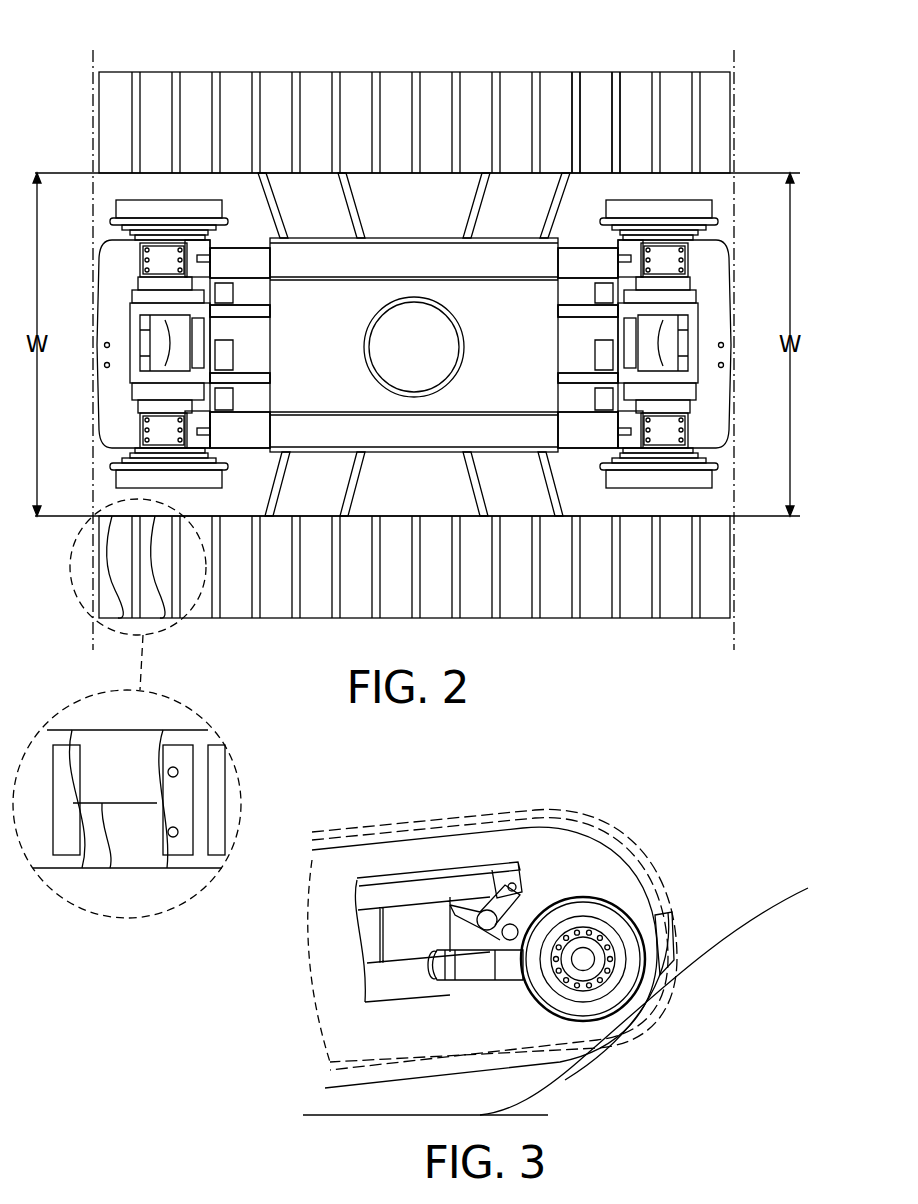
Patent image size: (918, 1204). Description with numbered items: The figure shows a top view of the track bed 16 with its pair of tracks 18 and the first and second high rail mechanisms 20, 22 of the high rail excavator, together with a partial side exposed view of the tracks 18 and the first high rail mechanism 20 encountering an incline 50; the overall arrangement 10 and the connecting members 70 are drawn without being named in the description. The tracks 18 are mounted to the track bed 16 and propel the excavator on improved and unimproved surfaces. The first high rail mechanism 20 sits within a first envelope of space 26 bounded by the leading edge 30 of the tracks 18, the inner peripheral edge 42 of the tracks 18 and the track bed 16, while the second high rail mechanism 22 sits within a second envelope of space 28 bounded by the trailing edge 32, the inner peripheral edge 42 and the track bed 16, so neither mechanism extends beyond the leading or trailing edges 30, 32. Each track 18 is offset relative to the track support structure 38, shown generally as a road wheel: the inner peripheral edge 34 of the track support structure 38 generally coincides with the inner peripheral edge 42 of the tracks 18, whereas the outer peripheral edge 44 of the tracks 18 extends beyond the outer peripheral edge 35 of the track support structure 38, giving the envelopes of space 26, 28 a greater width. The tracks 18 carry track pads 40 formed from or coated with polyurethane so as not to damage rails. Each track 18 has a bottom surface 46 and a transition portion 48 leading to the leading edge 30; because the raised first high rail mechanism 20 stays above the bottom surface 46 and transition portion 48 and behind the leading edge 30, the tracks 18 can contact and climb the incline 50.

In FIG. 3, the tracked vehicle 10 is at (355, 815).
In FIG. 2, the track bed 16 is at (415, 248).
In FIG. 2, the tracks 18 is at (415, 72).
In FIG. 3, the tracks 18 is at (435, 838).
In FIG. 2, the first high rail mechanism 20 is at (100, 215).
In FIG. 3, the first high rail mechanism 20 is at (572, 860).
In FIG. 2, the second high rail mechanism 22 is at (728, 218).
In FIG. 2, the first envelope of space 26 is at (240, 222).
In FIG. 2, the second envelope of space 28 is at (566, 220).
In FIG. 2, the leading edge 30 is at (90, 65).
In FIG. 3, the leading edge 30 is at (663, 913).
In FIG. 2, the trailing edge 32 is at (734, 635).
In FIG. 2, the inner peripheral edge of the track support structure 34 is at (100, 730).
In FIG. 2, the outer peripheral edge of the track support structure 35 is at (110, 868).
In FIG. 2, the track support structure 38 is at (137, 752).
In FIG. 2, the track pads 40 is at (632, 85).
In FIG. 3, the track pads 40 is at (552, 810).
In FIG. 2, the inner peripheral edge of the tracks 42 is at (168, 173).
In FIG. 2, the outer peripheral edge of the tracks 44 is at (235, 72).
In FIG. 3, the bottom surface 46 is at (450, 1075).
In FIG. 3, the transition portion 48 is at (650, 1005).
In FIG. 3, the incline 50 is at (644, 1001).
In FIG. 2, the connecting arms 70 is at (258, 285).